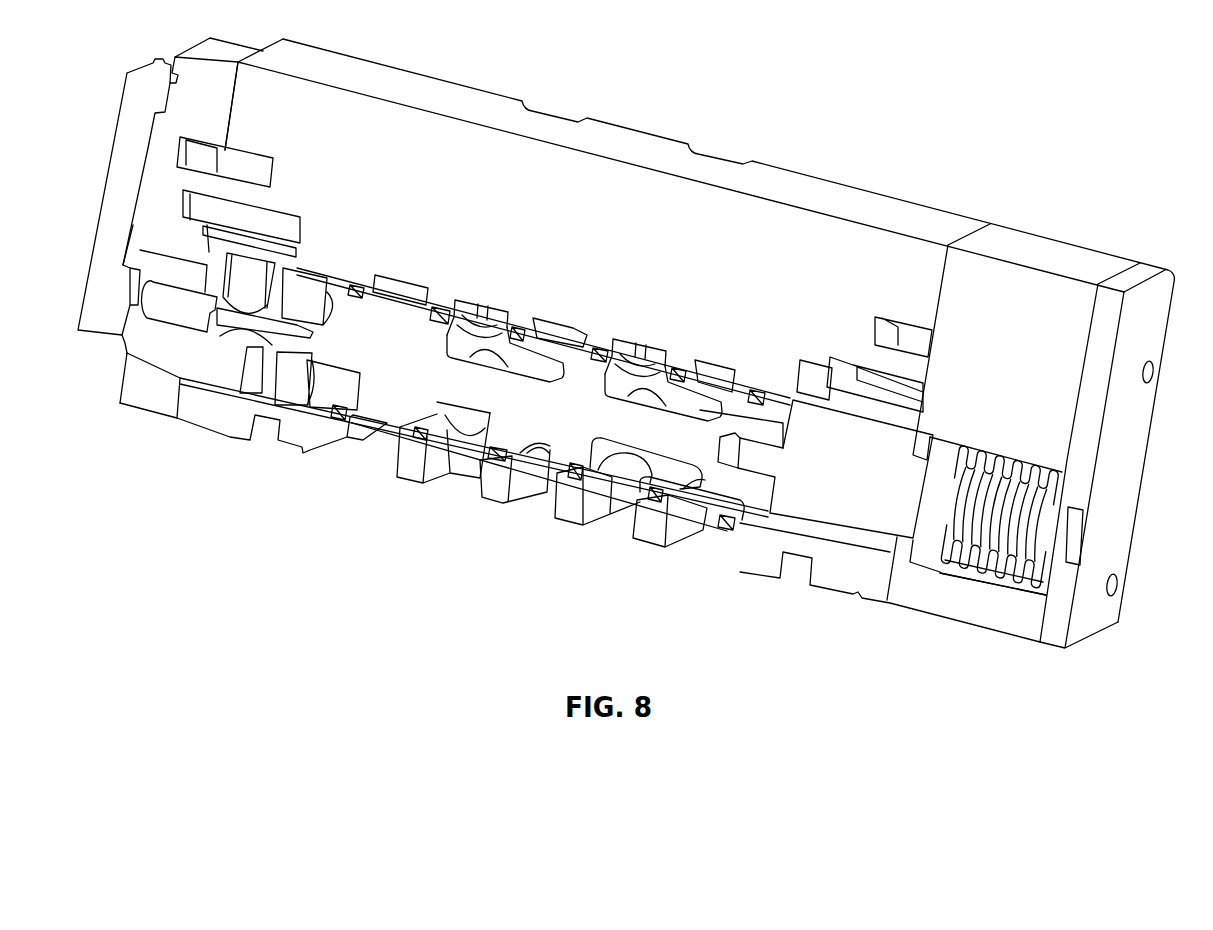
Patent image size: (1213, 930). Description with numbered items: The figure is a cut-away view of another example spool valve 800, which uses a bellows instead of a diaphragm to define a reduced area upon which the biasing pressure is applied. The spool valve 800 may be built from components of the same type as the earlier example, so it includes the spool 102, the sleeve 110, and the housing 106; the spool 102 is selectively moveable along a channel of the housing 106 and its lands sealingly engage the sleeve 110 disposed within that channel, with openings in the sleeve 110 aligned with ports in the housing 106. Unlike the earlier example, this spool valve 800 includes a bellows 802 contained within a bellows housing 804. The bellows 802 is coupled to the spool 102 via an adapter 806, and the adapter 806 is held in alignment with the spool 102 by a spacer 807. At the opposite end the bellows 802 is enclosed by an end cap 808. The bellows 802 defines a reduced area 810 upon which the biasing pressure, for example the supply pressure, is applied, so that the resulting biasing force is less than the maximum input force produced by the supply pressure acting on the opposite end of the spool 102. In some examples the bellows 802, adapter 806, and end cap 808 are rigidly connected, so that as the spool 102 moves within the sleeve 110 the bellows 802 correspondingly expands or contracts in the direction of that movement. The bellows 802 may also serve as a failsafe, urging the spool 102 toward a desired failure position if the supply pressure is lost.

The spool valve 800 is at (882, 126).
The housing 106 is at (618, 177).
The bellows housing 804 is at (1023, 290).
The end cap 808 is at (1128, 498).
The sleeve 110 is at (566, 455).
The spool 102 is at (408, 387).
The adapter 806 is at (813, 498).
The spacer 807 is at (857, 543).
The reduced area 810 is at (950, 512).
The bellows 802 is at (997, 573).